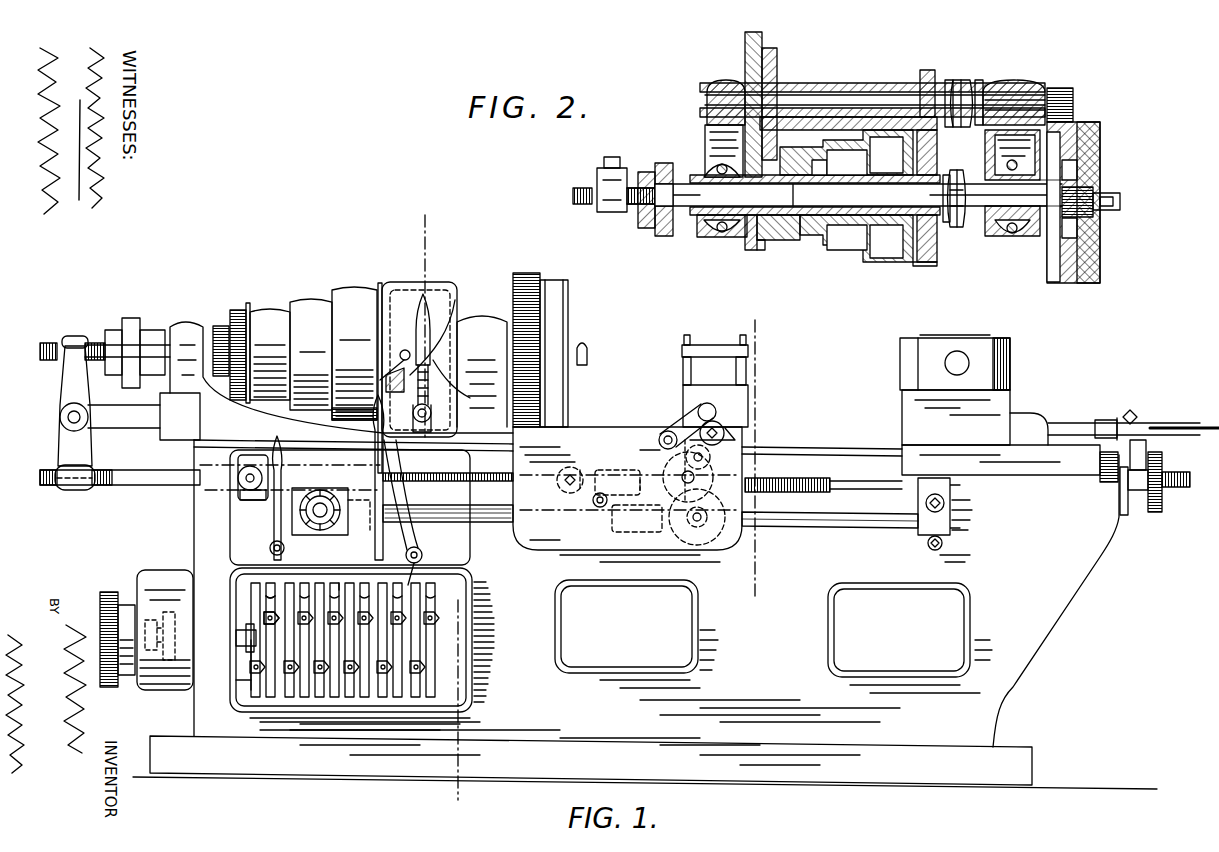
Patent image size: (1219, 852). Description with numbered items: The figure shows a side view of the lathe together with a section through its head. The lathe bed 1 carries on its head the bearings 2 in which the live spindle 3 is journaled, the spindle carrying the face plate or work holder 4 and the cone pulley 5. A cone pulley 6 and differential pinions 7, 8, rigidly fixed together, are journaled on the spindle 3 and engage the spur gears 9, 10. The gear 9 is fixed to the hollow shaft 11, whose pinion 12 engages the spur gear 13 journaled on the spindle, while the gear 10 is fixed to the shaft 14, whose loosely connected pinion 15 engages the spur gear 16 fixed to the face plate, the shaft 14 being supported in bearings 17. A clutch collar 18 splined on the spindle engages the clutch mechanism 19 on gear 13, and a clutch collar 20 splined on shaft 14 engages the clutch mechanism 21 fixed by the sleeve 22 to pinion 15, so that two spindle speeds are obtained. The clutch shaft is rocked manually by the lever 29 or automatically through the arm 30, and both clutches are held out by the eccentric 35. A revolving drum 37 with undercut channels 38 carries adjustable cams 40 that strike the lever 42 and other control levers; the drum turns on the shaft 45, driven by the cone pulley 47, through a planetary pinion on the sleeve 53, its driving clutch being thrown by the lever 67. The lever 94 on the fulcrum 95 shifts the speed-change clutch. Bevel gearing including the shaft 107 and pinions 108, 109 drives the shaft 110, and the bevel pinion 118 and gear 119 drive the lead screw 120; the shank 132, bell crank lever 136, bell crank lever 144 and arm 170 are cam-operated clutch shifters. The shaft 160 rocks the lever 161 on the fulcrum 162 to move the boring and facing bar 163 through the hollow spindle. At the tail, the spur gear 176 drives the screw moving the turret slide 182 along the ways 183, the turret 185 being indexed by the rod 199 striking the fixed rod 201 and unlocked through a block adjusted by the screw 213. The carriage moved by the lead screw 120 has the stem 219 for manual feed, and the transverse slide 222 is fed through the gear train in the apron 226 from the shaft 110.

In FIG. 1, the lathe bed 1 is at (1072, 607).
In FIG. 1, the bearings 2 is at (187, 322).
In FIG. 2, the bearings 2 is at (722, 237).
In FIG. 1, the live spindle 3 is at (97, 343).
In FIG. 2, the live spindle 3 is at (668, 170).
In FIG. 1, the face plate or work holder 4 is at (566, 322).
In FIG. 2, the face plate or work holder 4 is at (1090, 283).
In FIG. 1, the cone pulley 5 is at (128, 318).
In FIG. 2, the cone pulley 5 is at (658, 238).
In FIG. 1, the cone pulley 6 is at (305, 300).
In FIG. 2, the cone pulley 6 is at (850, 262).
In FIG. 1, the differential pinion 7 is at (240, 310).
In FIG. 2, the differential pinion 7 is at (758, 250).
In FIG. 1, the differential pinion 8 is at (220, 326).
In FIG. 2, the differential pinion 8 is at (765, 240).
In FIG. 2, the spur gear 9 is at (777, 65).
In FIG. 2, the spur gear 10 is at (745, 58).
In FIG. 2, the hollow shaft 11 is at (830, 83).
In FIG. 2, the pinion 12 is at (927, 70).
In FIG. 2, the spur gear 13 is at (922, 266).
In FIG. 2, the shaft 14 is at (865, 95).
In FIG. 2, the pinion 15 is at (1062, 88).
In FIG. 1, the spur gear 16 is at (527, 273).
In FIG. 2, the spur gear 16 is at (1055, 282).
In FIG. 1, the bearings 17 is at (757, 461).
In FIG. 2, the bearings 17 is at (712, 80).
In FIG. 1, the clutch sleeve or collar 18 is at (446, 392).
In FIG. 2, the clutch sleeve or collar 18 is at (955, 228).
In FIG. 2, the clutch mechanism 19 is at (945, 222).
In FIG. 2, the clutch sleeve or collar 20 is at (950, 80).
In FIG. 2, the clutch mechanism 21 is at (975, 80).
In FIG. 2, the sleeve 22 is at (1005, 80).
In FIG. 1, the lever 29 is at (427, 298).
In FIG. 1, the arm 30 is at (416, 424).
In FIG. 1, the eccentric 35 is at (400, 352).
In FIG. 1, the revolving drum 37 is at (258, 678).
In FIG. 1, the undercut peripheral channels 38 is at (266, 645).
In FIG. 1, the cams 40 is at (270, 614).
In FIG. 1, the lever 42 is at (307, 590).
In FIG. 1, the supporting shaft 45 is at (238, 640).
In FIG. 1, the cone pulley 47 is at (122, 600).
In FIG. 1, the sleeve 53 is at (470, 636).
In FIG. 1, the lever 67 is at (365, 410).
In FIG. 1, the lever 94 is at (272, 446).
In FIG. 1, the fulcrum 95 is at (270, 548).
In FIG. 1, the journaled shaft 107 is at (300, 510).
In FIG. 1, the bevel pinion 108 is at (312, 535).
In FIG. 1, the bevel pinion 109 is at (340, 520).
In FIG. 1, the journaled shaft 110 is at (470, 522).
In FIG. 1, the bevel pinion 118 is at (240, 477).
In FIG. 1, the bevel gear 119 is at (248, 495).
In FIG. 1, the lead screw 120 is at (812, 478).
In FIG. 1, the shank 132 is at (412, 575).
In FIG. 1, the bell crank lever 136 is at (422, 556).
In FIG. 1, the bell crank lever 144 is at (420, 550).
In FIG. 1, the journaled shaft 160 is at (45, 472).
In FIG. 1, the lever 161 is at (68, 392).
In FIG. 2, the lever 161 is at (600, 178).
In FIG. 1, the fulcrum 162 is at (60, 420).
In FIG. 1, the boring and facing bar 163 is at (47, 360).
In FIG. 2, the boring and facing bar 163 is at (572, 192).
In FIG. 1, the arm 170 is at (340, 590).
In FIG. 1, the spur gear 176 is at (1160, 510).
In FIG. 1, the rear turret slide or carriage 182 is at (1012, 405).
In FIG. 1, the ways 183 is at (790, 448).
In FIG. 1, the turret 185 is at (1012, 360).
In FIG. 1, the rod 199 is at (1075, 423).
In FIG. 1, the fixed rod 201 is at (1175, 423).
In FIG. 1, the journaled screw 213 is at (1168, 472).
In FIG. 1, the journaled stem 219 is at (572, 476).
In FIG. 1, the slide or carriage 222 is at (745, 412).
In FIG. 1, the apron 226 is at (632, 428).